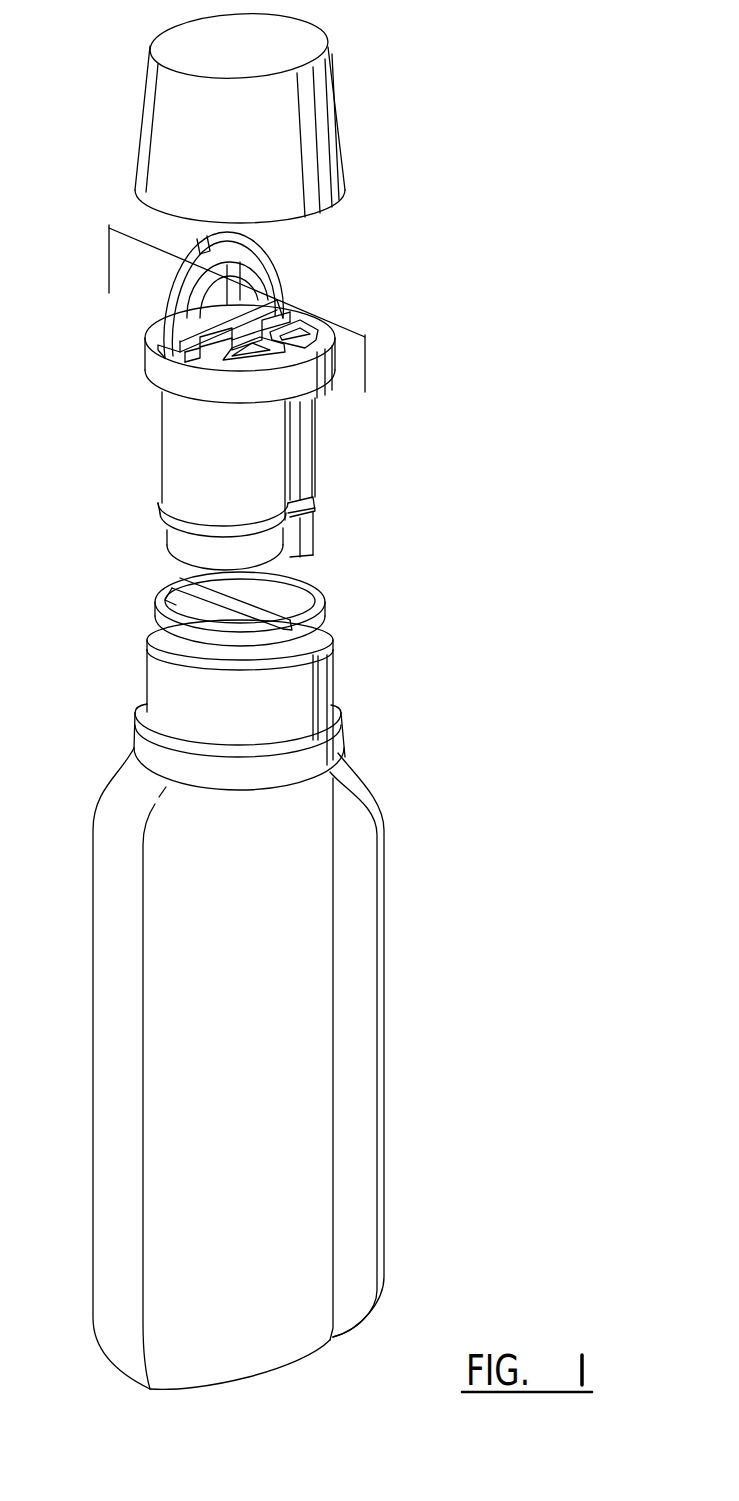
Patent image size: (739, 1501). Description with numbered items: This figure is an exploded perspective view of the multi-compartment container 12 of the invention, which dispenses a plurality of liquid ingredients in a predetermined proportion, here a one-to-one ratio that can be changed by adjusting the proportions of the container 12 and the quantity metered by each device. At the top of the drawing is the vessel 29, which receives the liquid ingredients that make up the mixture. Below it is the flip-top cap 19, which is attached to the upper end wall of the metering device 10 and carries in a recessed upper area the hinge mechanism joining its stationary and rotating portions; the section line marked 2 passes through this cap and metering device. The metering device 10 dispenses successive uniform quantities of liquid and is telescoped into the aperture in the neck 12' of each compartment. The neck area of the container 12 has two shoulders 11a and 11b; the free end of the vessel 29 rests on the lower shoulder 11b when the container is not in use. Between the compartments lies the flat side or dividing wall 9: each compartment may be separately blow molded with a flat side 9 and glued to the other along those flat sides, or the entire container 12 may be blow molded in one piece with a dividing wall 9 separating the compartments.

The vessel 29 is at (348, 123).
The section line 2- 2 is at (107, 293).
The flip-top cap 19 is at (170, 302).
The metering device 10 is at (160, 467).
The flat side / dividing wall 9 is at (270, 603).
The shoulder 11a is at (330, 633).
The neck 12' is at (199, 707).
The shoulder 11b is at (340, 722).
The multi-compartment container 12 is at (278, 1068).